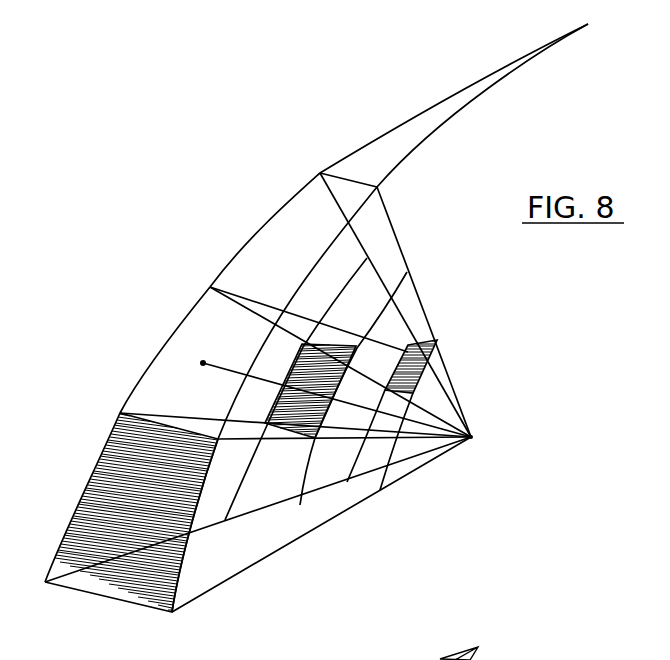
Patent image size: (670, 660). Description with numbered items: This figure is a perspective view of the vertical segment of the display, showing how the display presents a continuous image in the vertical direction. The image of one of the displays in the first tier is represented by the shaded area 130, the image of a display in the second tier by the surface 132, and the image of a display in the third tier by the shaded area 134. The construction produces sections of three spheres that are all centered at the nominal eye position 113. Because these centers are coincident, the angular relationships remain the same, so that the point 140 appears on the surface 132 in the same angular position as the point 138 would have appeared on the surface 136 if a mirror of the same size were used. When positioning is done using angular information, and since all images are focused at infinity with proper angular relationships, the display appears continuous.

The nominal eye position 113 is at (472, 437).
The shaded area representing the first tier display image 130 is at (138, 586).
The second tier display image surface 132 is at (328, 422).
The third tier display image 134 is at (437, 340).
The surface 136 is at (180, 339).
The point 138 is at (203, 363).
The point 140 is at (340, 340).